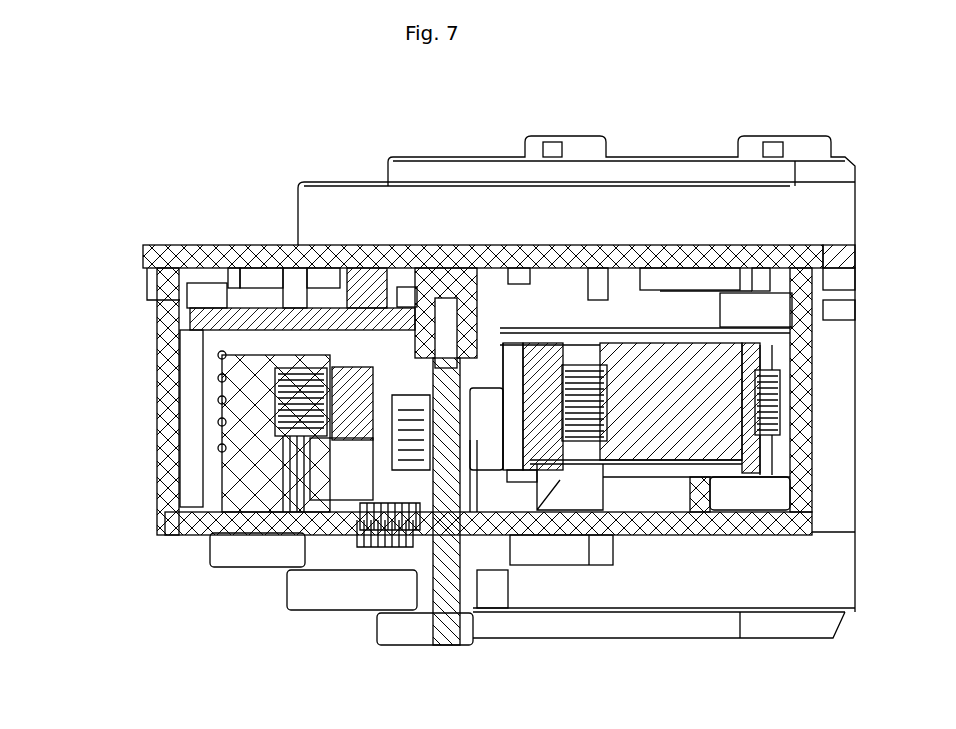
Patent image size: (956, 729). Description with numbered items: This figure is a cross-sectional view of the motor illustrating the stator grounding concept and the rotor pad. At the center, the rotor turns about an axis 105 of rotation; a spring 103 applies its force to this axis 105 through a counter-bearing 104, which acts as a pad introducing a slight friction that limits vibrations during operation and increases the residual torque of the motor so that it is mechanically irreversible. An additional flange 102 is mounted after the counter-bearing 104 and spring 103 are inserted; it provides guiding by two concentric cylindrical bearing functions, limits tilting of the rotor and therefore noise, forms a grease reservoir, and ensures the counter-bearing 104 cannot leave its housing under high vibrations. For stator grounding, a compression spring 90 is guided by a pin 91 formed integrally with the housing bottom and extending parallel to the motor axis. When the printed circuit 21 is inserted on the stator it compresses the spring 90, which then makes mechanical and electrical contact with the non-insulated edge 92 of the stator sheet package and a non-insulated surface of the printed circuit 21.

The printed circuit 21 is at (222, 323).
The compression spring 90 is at (218, 417).
The pin 91 is at (243, 430).
The edge of the stator sheet package 92 is at (273, 425).
The flange 102 is at (493, 378).
The spring 103 is at (386, 408).
The counter-bearing 104 is at (410, 410).
The axis of rotation 105 is at (443, 418).